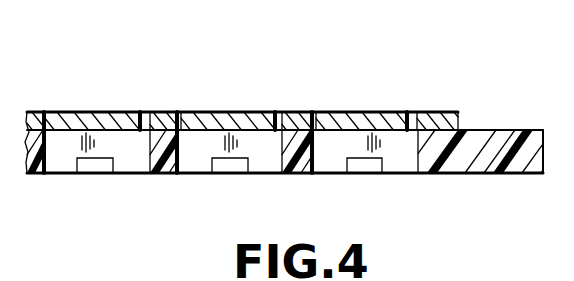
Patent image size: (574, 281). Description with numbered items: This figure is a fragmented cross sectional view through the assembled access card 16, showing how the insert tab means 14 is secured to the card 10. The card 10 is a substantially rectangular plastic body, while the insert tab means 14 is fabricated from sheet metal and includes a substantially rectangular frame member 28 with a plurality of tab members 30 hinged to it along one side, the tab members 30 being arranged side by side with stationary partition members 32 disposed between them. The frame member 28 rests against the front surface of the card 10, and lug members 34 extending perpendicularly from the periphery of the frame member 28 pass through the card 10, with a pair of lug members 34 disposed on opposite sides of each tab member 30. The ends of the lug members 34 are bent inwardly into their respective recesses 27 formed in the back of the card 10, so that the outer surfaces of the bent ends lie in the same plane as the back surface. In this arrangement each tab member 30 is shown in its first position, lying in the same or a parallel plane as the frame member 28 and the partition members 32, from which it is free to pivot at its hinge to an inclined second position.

The card 10 is at (510, 138).
The insert tab means 14 is at (94, 106).
The access card 16 is at (480, 107).
The recess 27 is at (110, 165).
The frame member 28 is at (426, 110).
The tab member 30 is at (108, 112).
The partition member 32 is at (166, 112).
The lug member 34 is at (93, 168).